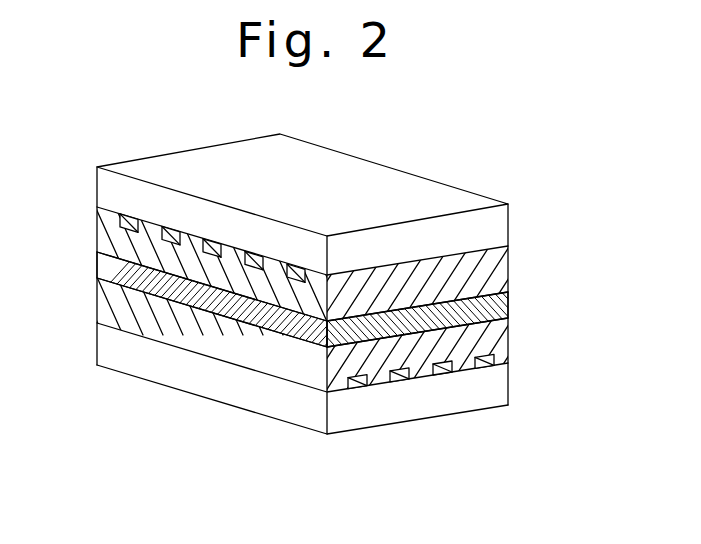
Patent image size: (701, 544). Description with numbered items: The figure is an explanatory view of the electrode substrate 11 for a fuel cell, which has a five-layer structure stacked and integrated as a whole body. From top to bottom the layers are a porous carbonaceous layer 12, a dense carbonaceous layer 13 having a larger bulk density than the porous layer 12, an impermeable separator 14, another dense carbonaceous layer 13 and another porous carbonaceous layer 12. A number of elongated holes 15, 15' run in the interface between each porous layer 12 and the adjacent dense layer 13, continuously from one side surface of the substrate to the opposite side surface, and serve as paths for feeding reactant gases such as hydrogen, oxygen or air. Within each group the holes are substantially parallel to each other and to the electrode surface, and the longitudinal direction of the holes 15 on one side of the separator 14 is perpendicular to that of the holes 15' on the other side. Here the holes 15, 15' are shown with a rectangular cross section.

The electrode substrate 11 is at (79, 160).
The porous carbonaceous layer 12 is at (510, 223).
The dense carbonaceous layer 13 is at (515, 266).
The impermeable separator 14 is at (512, 297).
The elongated holes 15 is at (212, 199).
The elongated holes 15' is at (421, 404).